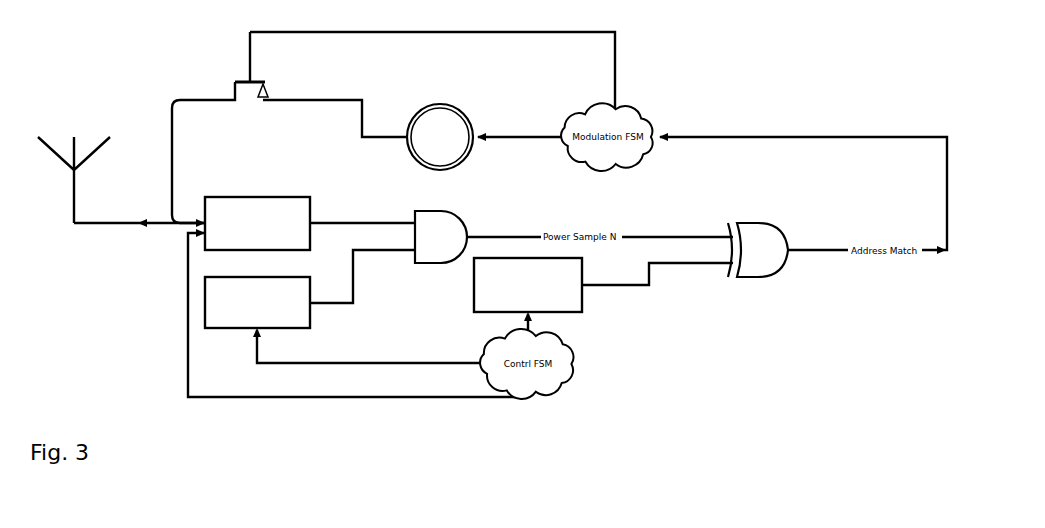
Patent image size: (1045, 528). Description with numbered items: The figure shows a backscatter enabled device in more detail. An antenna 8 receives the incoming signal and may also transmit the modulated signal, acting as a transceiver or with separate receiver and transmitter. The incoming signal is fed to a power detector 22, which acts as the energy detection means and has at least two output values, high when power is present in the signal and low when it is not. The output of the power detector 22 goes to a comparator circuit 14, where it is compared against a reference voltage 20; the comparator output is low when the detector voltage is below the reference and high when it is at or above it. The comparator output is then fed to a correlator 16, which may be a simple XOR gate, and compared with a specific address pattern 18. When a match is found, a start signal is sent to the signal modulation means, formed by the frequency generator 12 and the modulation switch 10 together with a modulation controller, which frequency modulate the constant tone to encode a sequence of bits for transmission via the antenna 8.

The antenna 8 is at (83, 142).
The modulation switch 10 is at (242, 80).
The frequency generator 12 is at (447, 123).
The comparator circuit 14 is at (448, 225).
The correlator 16 is at (763, 260).
The address pattern 18 is at (565, 300).
The reference voltage 20 is at (222, 310).
The power detector 22 is at (218, 238).